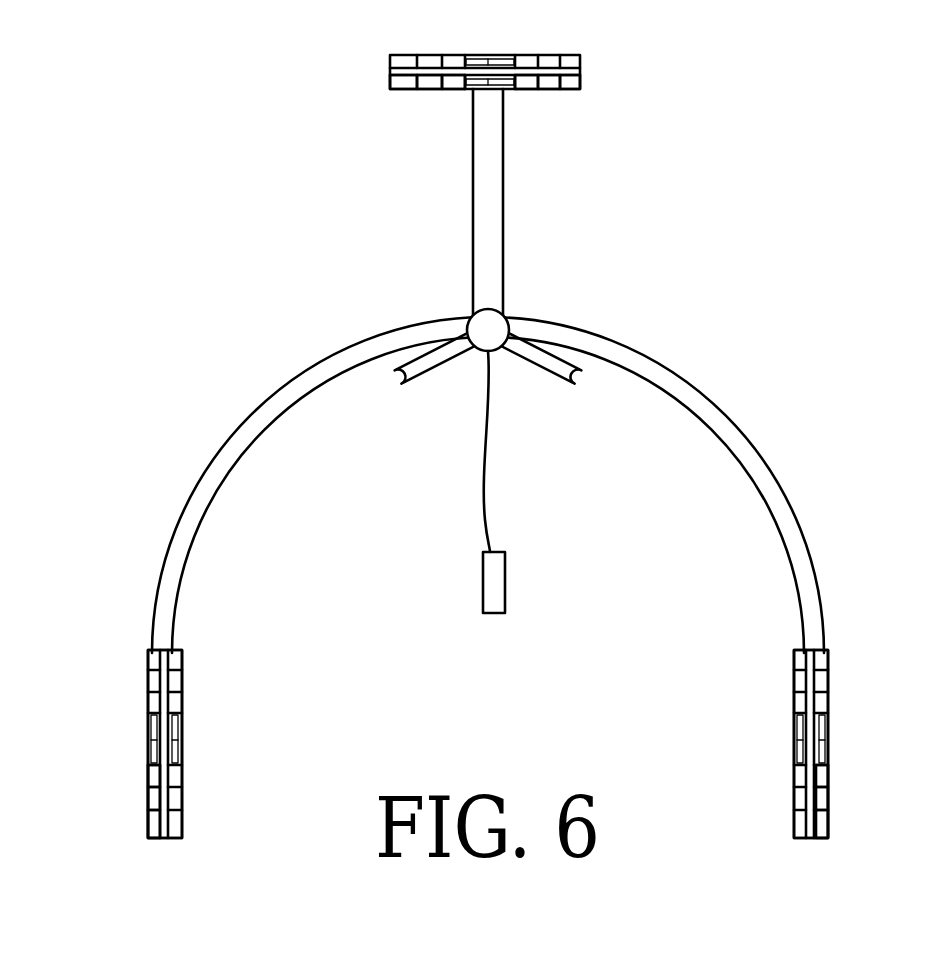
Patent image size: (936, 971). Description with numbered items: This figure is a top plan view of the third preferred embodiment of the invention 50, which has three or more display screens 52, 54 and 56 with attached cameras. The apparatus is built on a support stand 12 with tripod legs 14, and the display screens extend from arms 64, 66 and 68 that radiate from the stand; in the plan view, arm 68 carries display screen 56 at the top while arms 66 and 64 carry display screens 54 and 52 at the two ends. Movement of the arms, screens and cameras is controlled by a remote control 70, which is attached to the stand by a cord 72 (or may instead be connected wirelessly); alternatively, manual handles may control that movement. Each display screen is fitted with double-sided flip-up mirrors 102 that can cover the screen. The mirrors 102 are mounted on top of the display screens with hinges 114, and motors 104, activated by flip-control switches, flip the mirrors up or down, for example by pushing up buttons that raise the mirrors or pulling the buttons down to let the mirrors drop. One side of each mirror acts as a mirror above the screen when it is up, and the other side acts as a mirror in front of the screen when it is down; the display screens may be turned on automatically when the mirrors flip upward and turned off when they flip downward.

The support stand 12 is at (470, 318).
The tripod legs 14 is at (397, 390).
The third preferred embodiment of the invention 50 is at (499, 485).
The display screen 52 is at (794, 745).
The display screen 54 is at (182, 742).
The display screen 56 is at (404, 90).
The arm 64 is at (760, 458).
The arm 66 is at (208, 517).
The arm 68 is at (503, 197).
The remote control 70 is at (505, 580).
The cord 72 is at (490, 465).
The double-sided flip-up mirrors 102 is at (390, 70).
The motors 104 is at (473, 56).
The hinges 114 is at (537, 90).